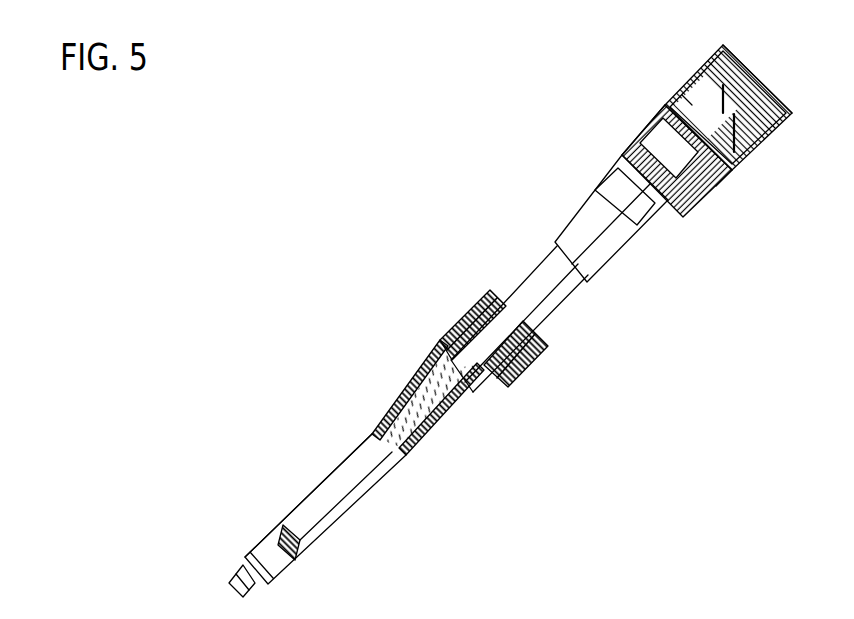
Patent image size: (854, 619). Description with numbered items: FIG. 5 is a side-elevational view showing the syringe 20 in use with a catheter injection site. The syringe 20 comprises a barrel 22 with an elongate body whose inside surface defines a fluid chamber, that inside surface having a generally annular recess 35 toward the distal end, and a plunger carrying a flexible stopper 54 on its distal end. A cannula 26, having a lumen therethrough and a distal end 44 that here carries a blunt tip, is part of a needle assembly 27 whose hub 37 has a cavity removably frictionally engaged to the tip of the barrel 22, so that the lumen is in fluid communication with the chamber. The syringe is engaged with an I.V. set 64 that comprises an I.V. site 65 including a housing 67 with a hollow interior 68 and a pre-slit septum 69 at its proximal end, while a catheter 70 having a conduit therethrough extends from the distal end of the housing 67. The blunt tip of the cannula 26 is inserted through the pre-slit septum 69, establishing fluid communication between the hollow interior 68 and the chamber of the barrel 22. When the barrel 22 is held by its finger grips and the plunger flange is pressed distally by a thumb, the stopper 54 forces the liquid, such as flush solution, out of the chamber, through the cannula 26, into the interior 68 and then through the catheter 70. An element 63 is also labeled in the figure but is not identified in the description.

The syringe 20 is at (662, 93).
The barrel 22 is at (756, 156).
The cannula 26 is at (542, 278).
The needle assembly 27 is at (606, 193).
The annular recess 35 is at (738, 152).
The hub 37 is at (662, 221).
The distal end 44 is at (448, 374).
The stopper 54 is at (756, 71).
The adhesive 63 is at (692, 100).
The I.V. set 64 is at (277, 518).
The I.V. site 65 is at (472, 408).
The housing 67 is at (355, 437).
The hollow interior 68 is at (410, 398).
The septum 69 is at (544, 312).
The catheter 70 is at (240, 567).